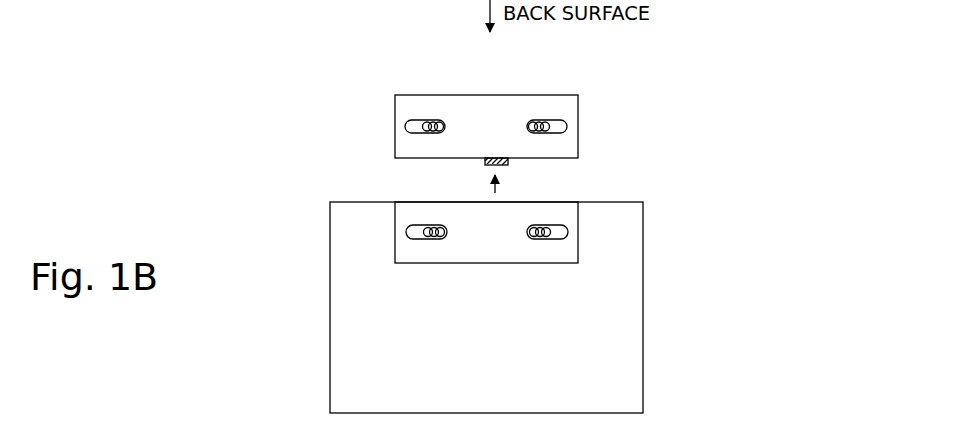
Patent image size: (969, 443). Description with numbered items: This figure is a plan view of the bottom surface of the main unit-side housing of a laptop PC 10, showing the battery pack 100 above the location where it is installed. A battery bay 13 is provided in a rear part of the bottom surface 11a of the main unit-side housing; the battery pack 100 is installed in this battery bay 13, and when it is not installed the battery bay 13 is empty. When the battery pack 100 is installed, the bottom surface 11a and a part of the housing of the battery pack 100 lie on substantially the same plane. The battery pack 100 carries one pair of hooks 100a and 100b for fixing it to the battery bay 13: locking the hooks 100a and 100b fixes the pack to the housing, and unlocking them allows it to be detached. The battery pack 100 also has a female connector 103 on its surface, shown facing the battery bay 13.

The laptop PC 10 is at (340, 153).
The bottom surface of the main unit-side housing 11a is at (643, 297).
The battery bay 13 is at (578, 229).
The battery pack 100 is at (568, 126).
The hook 100a is at (420, 120).
The hook 100b is at (554, 120).
The connector 103 is at (508, 162).